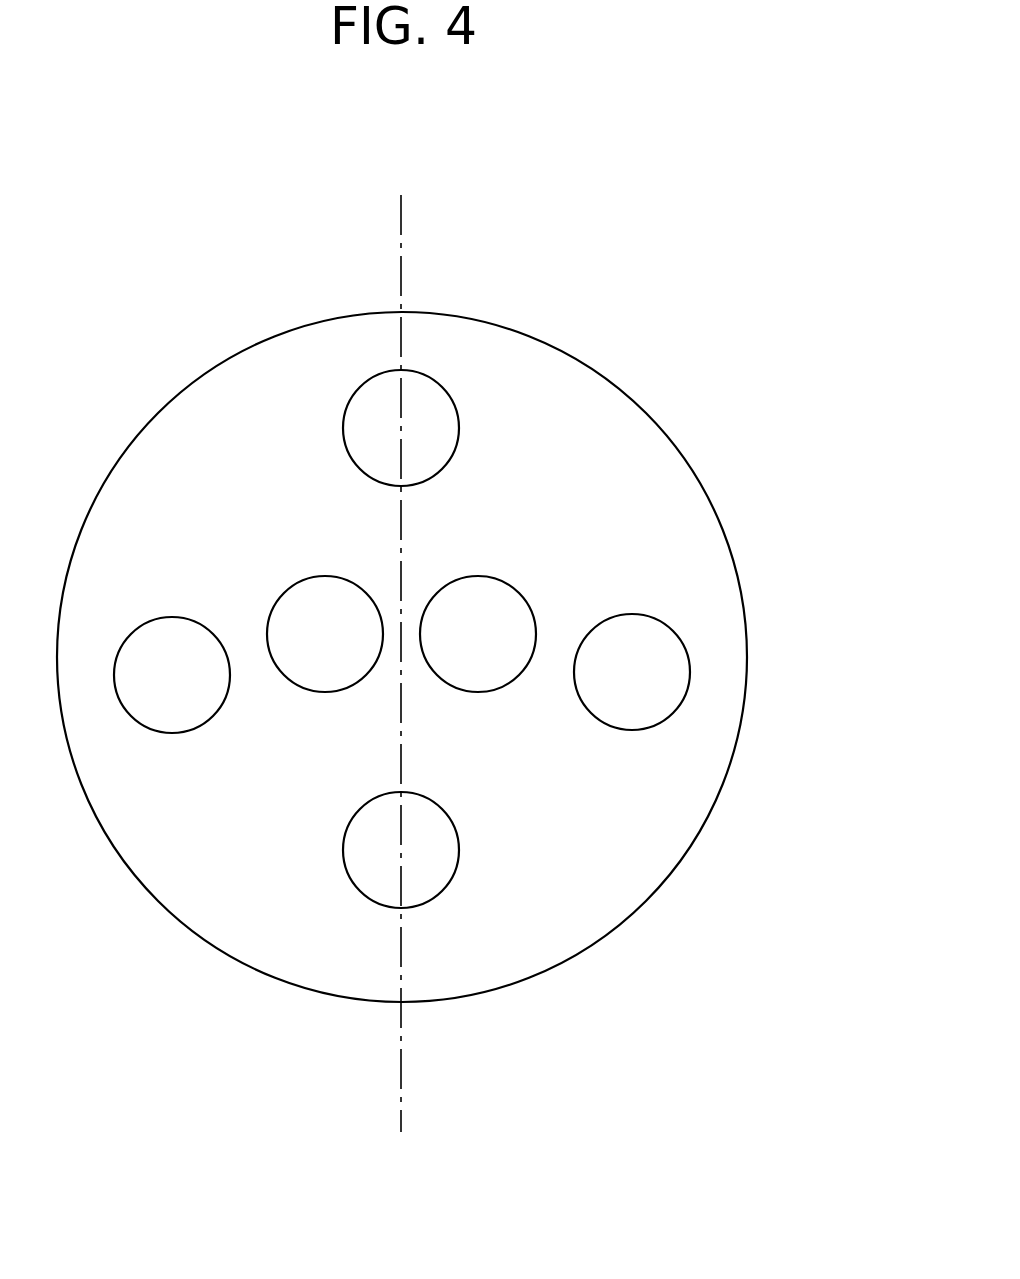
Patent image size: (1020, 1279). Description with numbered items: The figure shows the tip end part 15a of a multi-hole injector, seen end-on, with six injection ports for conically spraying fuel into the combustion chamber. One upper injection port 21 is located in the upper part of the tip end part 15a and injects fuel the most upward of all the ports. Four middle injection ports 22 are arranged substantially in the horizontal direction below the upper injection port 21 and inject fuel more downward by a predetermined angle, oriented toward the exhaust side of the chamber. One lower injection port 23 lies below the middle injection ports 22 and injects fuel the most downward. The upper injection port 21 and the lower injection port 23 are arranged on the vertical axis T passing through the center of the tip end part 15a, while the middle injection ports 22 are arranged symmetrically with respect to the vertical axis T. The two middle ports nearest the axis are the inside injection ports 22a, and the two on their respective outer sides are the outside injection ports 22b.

The tip end part 15a is at (668, 835).
The vertical axis T is at (402, 262).
The upper injection port 21 is at (455, 452).
The middle injection ports 22 is at (505, 638).
The inside injection ports 22a is at (527, 614).
The outside injection ports 22b is at (130, 637).
The lower injection port 23 is at (458, 864).